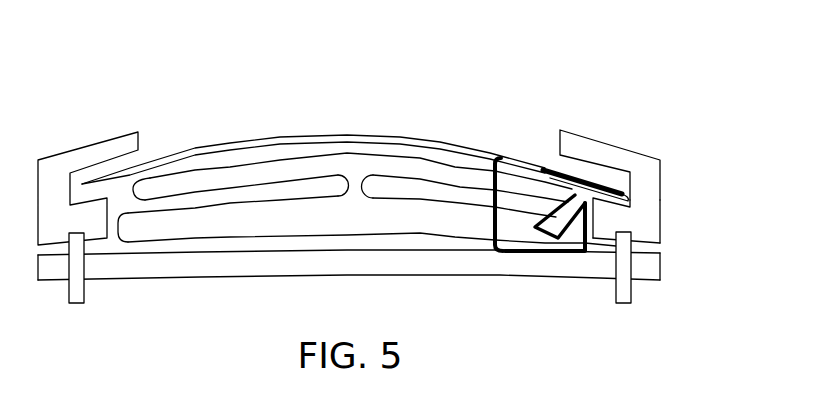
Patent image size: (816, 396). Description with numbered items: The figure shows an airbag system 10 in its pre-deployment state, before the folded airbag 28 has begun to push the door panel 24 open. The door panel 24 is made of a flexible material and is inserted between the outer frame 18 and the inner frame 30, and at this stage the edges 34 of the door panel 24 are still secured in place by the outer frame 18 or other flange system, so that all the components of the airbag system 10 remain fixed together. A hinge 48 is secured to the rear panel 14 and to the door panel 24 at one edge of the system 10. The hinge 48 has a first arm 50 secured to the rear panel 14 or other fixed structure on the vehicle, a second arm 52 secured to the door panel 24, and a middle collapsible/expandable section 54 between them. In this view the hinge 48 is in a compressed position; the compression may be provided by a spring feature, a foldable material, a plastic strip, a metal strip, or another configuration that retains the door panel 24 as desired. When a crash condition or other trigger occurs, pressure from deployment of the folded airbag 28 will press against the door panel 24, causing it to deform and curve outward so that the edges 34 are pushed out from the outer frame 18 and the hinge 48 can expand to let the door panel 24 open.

The airbag system 10 is at (253, 99).
The rear panel 14 is at (160, 270).
The outer frame 18 is at (617, 165).
The door panel 24 is at (533, 167).
The folded airbag 28 is at (217, 187).
The inner frame 30 is at (662, 245).
The edges 34 is at (640, 207).
The hinge 48 is at (495, 203).
The first arm 50 is at (562, 252).
The second arm 52 is at (573, 196).
The middle collapsible/expandable section 54 is at (533, 218).